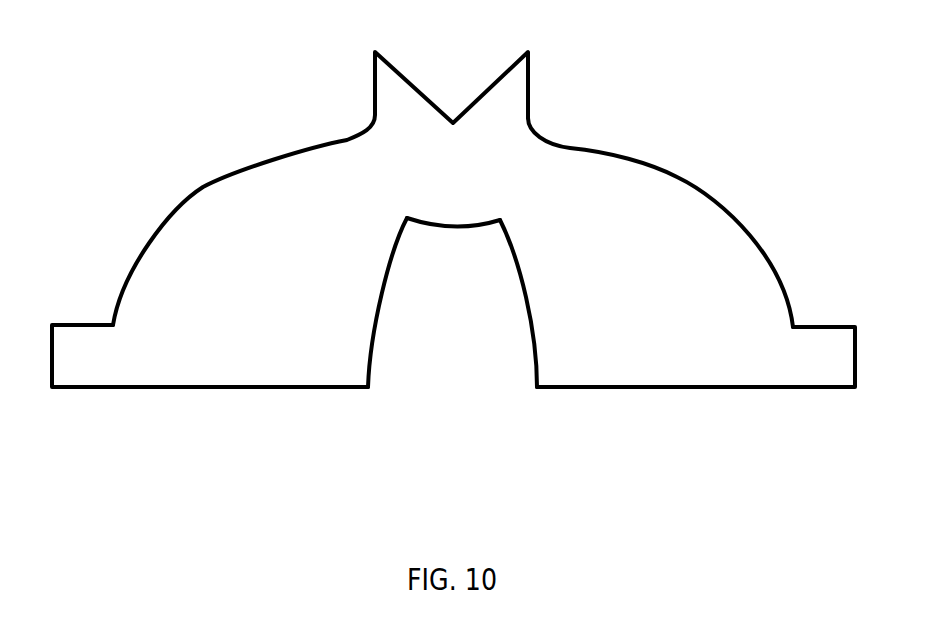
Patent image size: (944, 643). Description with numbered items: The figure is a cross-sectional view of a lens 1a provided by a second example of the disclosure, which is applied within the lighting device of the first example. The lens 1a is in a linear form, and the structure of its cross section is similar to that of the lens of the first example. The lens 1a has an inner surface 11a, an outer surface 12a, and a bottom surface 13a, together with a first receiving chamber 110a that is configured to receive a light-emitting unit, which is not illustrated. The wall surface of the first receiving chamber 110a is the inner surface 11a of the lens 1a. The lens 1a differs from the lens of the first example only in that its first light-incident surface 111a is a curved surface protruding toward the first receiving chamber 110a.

The lens 1a is at (345, 168).
The inner surface 11a is at (380, 278).
The first receiving chamber 110a is at (410, 282).
The first light-incident surface 111a is at (445, 228).
The outer surface 12a is at (678, 177).
The bottom surface 13a is at (635, 385).